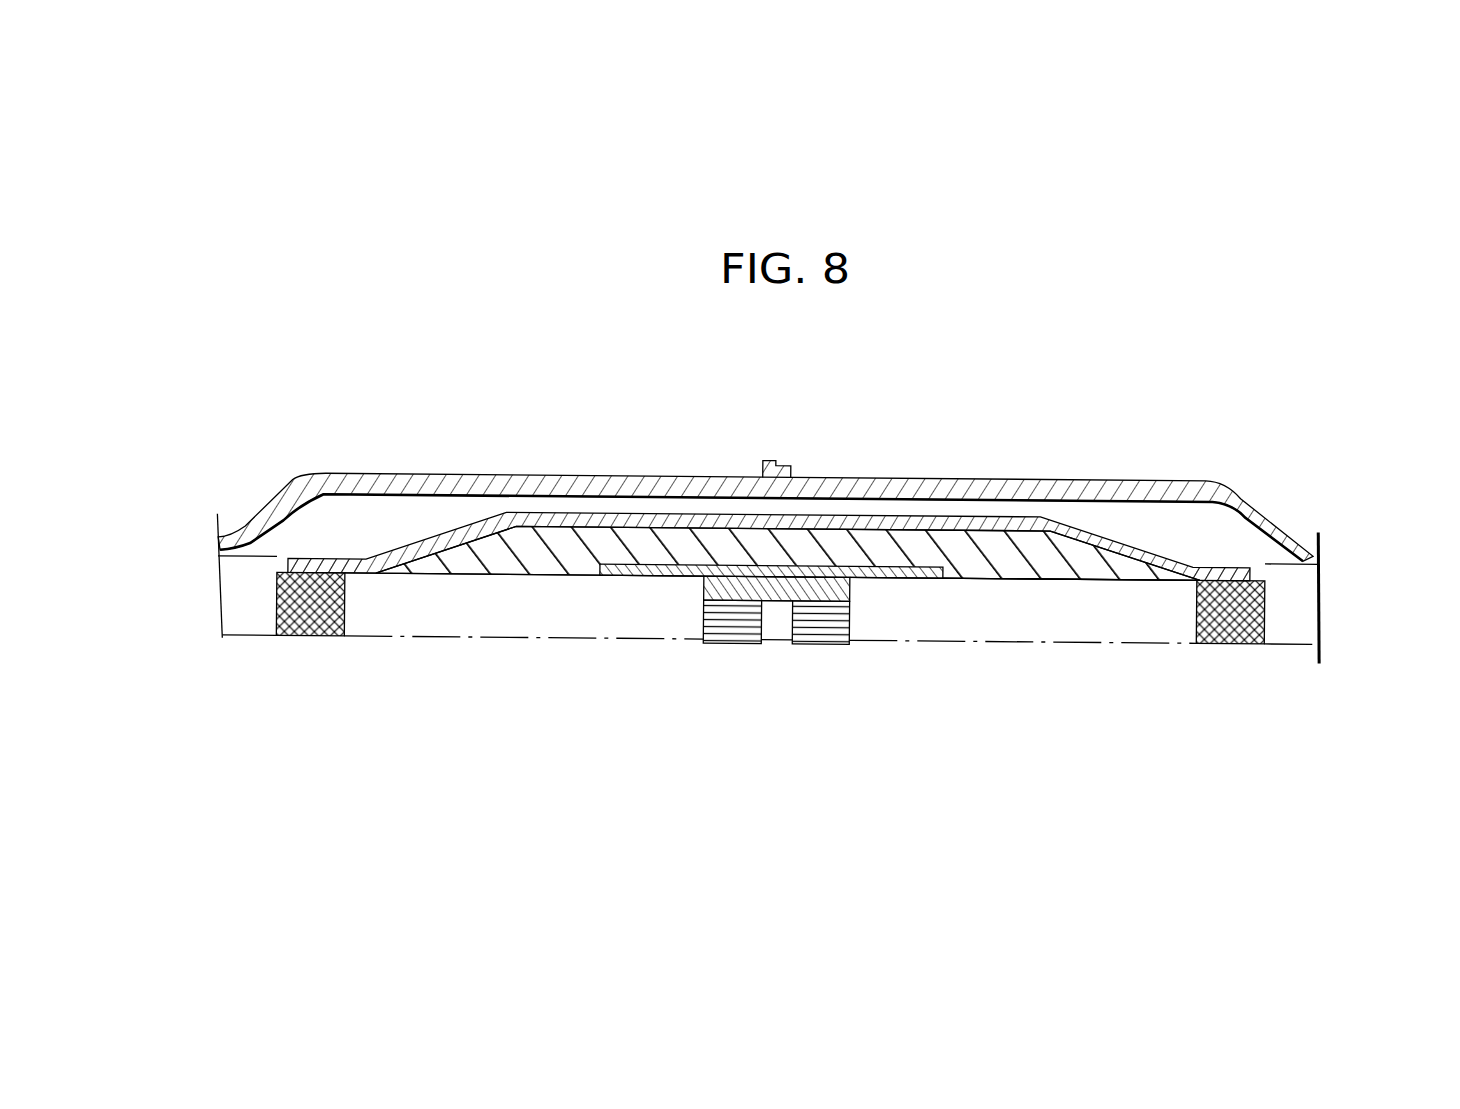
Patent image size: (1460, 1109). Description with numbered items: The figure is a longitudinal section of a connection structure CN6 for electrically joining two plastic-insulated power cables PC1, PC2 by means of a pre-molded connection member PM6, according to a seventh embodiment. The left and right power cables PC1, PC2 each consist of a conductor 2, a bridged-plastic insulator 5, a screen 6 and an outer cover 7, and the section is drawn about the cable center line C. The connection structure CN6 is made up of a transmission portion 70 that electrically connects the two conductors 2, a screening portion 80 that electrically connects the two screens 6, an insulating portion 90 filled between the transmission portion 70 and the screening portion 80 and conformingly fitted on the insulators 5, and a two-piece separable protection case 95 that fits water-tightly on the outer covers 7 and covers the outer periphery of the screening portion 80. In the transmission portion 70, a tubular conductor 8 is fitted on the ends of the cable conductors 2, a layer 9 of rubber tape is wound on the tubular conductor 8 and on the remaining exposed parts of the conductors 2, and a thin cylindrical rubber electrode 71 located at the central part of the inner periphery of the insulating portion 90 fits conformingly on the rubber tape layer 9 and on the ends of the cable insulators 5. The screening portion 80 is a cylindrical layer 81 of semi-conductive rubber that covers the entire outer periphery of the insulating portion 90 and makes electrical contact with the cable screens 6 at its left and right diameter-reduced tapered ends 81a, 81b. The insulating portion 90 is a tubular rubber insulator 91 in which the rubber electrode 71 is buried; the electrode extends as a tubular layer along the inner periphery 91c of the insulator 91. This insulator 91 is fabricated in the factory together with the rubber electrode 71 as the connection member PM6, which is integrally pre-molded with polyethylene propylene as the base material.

The conductor 2 is at (740, 643).
The bridged-plastic insulator 5 is at (512, 630).
The screen 6 is at (318, 616).
The outer cover 7 is at (250, 613).
The tubular conductor 8 is at (778, 630).
The layer of rubber tape 9 is at (700, 590).
The transmission portion 70 is at (748, 688).
The rubber electrode 71 is at (633, 577).
The screening portion 80 is at (820, 507).
The cylindrical layer of semi-conductive rubber 81 is at (533, 512).
The tapered end 81a is at (322, 560).
The tapered end 81b is at (1240, 565).
The insulating portion 90 is at (867, 516).
The tubular rubber insulator 91 is at (990, 530).
The inner periphery 91c is at (963, 580).
The protection case 95 is at (713, 475).
The center line C is at (1010, 643).
The connection structure CN6 is at (1053, 433).
The pre-molded connection member PM6 is at (1123, 550).
The power cable PC1 is at (215, 598).
The power cable PC2 is at (1322, 600).